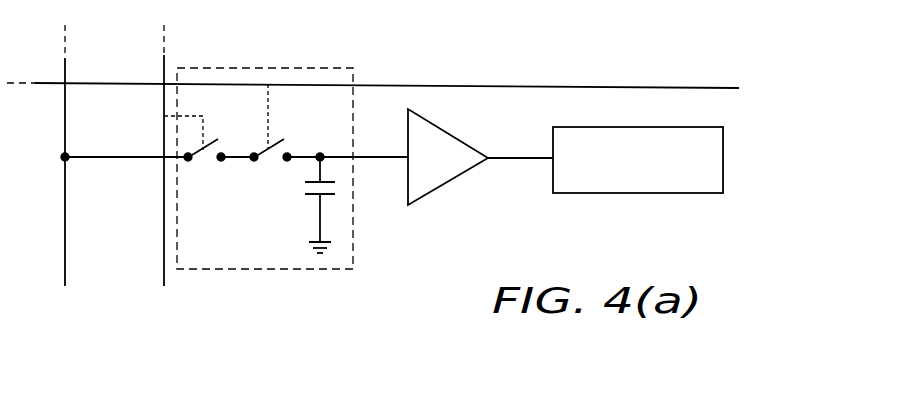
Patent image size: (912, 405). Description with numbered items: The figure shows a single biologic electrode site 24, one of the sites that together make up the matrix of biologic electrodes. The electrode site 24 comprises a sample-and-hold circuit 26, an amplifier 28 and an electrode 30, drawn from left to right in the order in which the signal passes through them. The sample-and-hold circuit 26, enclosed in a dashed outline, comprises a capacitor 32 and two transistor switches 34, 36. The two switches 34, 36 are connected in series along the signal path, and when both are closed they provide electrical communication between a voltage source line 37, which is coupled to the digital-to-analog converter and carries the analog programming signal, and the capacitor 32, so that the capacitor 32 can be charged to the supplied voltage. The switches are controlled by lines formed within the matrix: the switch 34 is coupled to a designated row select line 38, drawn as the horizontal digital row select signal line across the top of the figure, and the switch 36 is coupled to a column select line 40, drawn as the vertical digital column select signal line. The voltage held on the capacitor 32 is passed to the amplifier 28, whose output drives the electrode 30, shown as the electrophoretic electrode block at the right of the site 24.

The biologic electrode site 24 is at (572, 53).
The sample-and-hold circuit 26 is at (277, 270).
The amplifier 28 is at (457, 131).
The electrode 30 is at (723, 160).
The capacitor 32 is at (307, 179).
The transistor switch 34 is at (268, 149).
The transistor switch 36 is at (197, 157).
The voltage source line 37 is at (65, 193).
The row select line 38 is at (648, 87).
The column select line 40 is at (163, 243).